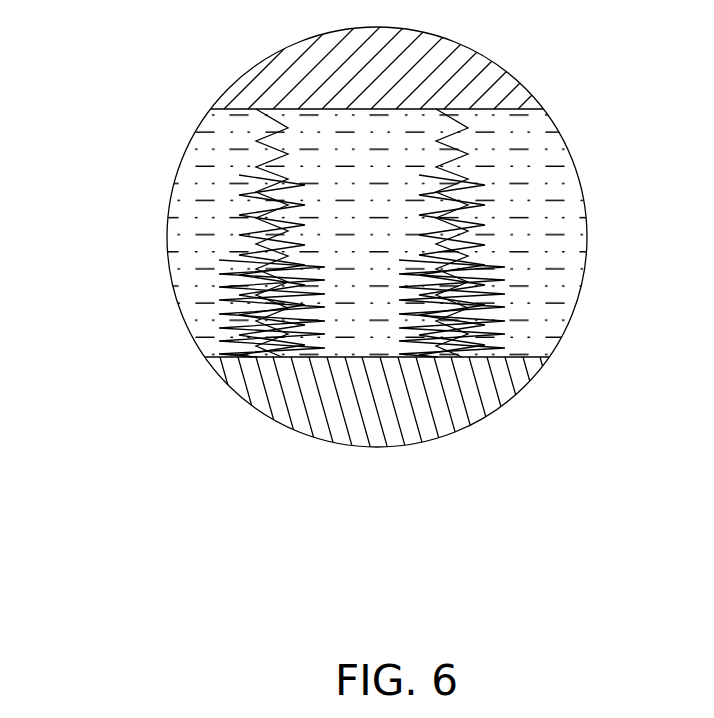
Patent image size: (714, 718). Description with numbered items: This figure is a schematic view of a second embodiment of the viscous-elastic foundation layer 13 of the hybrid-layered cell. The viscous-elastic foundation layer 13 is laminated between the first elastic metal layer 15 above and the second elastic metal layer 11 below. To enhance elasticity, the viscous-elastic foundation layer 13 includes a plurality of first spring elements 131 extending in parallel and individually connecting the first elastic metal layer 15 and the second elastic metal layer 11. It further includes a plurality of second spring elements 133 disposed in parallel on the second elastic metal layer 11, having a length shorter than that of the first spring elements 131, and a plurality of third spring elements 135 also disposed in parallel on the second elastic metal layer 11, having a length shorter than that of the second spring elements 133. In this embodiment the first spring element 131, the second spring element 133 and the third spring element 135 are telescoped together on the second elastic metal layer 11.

The second elastic metal layer 11 is at (470, 394).
The viscous-elastic foundation layer 13 is at (558, 234).
The first elastic metal layer 15 is at (458, 64).
The first spring elements 131 is at (257, 127).
The second spring elements 133 is at (262, 199).
The third spring elements 135 is at (223, 262).